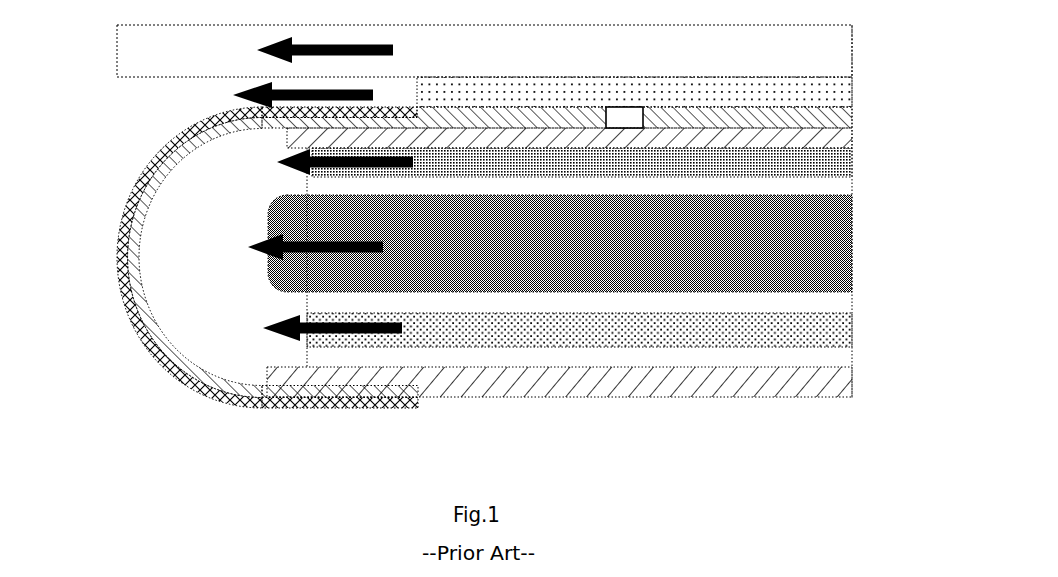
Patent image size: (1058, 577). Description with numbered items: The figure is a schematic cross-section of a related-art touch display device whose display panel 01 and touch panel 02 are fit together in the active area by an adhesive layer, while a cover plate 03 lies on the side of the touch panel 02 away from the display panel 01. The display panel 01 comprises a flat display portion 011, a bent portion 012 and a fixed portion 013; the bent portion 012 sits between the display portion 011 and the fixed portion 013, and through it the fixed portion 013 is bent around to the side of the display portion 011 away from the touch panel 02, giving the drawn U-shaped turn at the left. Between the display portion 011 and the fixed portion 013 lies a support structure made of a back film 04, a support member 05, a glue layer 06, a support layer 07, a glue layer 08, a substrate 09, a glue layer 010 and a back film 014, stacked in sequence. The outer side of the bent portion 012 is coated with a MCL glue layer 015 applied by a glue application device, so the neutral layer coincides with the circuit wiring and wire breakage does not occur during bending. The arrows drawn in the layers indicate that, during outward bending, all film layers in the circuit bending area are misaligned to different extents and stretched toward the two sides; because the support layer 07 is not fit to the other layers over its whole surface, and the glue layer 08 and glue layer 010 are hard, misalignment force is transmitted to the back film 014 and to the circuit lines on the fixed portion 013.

The display panel 01 is at (802, 117).
The touch panel 02 is at (802, 91).
The cover plate 03 is at (802, 52).
The back film 04 is at (802, 138).
The support member 05 is at (802, 163).
The glue layer 06 is at (802, 187).
The support layer 07 is at (802, 247).
The glue layer 08 is at (802, 303).
The substrate 09 is at (802, 332).
The glue layer 010 is at (802, 357).
The display portion 011 is at (624, 117).
The bent portion 012 is at (140, 248).
The fixed portion 013 is at (328, 409).
The back film 014 is at (802, 383).
The MCL glue layer 015 is at (118, 232).